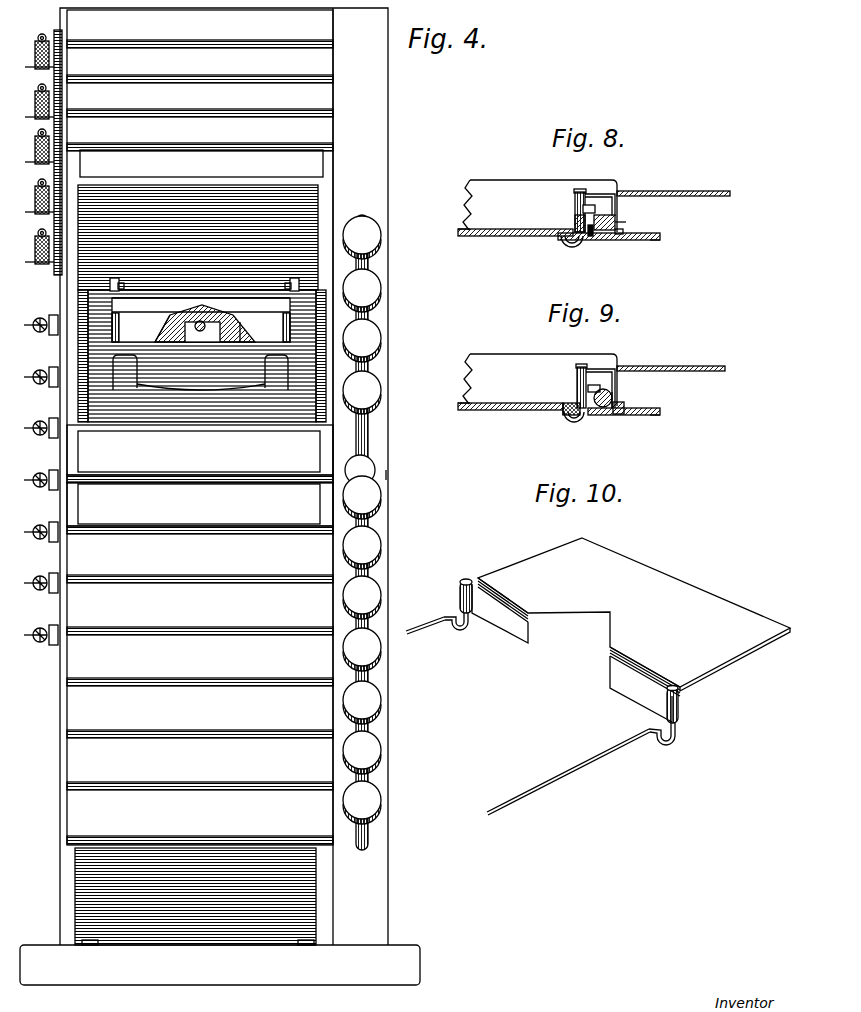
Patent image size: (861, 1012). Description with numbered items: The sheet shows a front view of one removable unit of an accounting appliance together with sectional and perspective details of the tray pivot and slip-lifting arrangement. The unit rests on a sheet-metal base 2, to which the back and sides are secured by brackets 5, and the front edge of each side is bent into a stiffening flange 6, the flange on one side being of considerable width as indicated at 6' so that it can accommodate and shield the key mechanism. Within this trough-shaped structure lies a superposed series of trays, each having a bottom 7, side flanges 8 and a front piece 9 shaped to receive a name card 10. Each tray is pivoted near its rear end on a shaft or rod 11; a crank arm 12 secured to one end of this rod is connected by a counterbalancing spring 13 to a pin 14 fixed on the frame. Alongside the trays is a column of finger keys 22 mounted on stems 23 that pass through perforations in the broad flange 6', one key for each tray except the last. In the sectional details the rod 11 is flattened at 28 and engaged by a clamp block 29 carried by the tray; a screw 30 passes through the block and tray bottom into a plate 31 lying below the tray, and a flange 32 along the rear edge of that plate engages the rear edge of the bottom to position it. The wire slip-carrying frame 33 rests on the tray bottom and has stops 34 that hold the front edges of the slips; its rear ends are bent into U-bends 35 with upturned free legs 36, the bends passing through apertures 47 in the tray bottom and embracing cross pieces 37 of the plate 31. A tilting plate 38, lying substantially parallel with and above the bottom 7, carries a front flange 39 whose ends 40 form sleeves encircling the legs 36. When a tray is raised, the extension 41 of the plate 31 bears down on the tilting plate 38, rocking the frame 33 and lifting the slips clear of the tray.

In FIG. 4, the base 2 is at (390, 956).
In FIG. 4, the bracket 5 is at (86, 946).
In FIG. 4, the flange 6 is at (210, 476).
In FIG. 4, the flange 6' is at (402, 460).
In FIG. 4, the bottom 7 is at (268, 198).
In FIG. 8, the bottom 7 is at (489, 237).
In FIG. 9, the bottom 7 is at (496, 411).
In FIG. 4, the flange 8 is at (82, 400).
In FIG. 8, the flange 8 is at (481, 181).
In FIG. 9, the flange 8 is at (486, 355).
In FIG. 4, the front piece 9 is at (333, 57).
In FIG. 4, the name card 10 is at (320, 168).
In FIG. 4, the shaft or rod 11 is at (240, 344).
In FIG. 8, the shaft or rod 11 is at (622, 229).
In FIG. 9, the shaft or rod 11 is at (613, 401).
In FIG. 4, the crank arm 12 is at (57, 32).
In FIG. 4, the spring 13 is at (40, 147).
In FIG. 4, the pin 14 is at (38, 70).
In FIG. 4, the finger key 22 is at (373, 290).
In FIG. 4, the stem 23 is at (370, 430).
In FIG. 4, the flattened portion 28 is at (192, 342).
In FIG. 8, the flattened portion 28 is at (615, 220).
In FIG. 4, the clamp block 29 is at (210, 340).
In FIG. 8, the clamp block 29 is at (620, 223).
In FIG. 9, the clamp block 29 is at (610, 395).
In FIG. 4, the screw 30 is at (215, 308).
In FIG. 8, the screw 30 is at (583, 210).
In FIG. 9, the screw 30 is at (596, 385).
In FIG. 4, the plate 31 is at (195, 283).
In FIG. 8, the plate 31 is at (611, 242).
In FIG. 9, the plate 31 is at (607, 416).
In FIG. 8, the flange 32 is at (623, 233).
In FIG. 9, the flange 32 is at (625, 408).
In FIG. 4, the slip-carrying frame 33 is at (220, 386).
In FIG. 8, the slip-carrying frame 33 is at (500, 229).
In FIG. 9, the slip-carrying frame 33 is at (500, 403).
In FIG. 10, the slip-carrying frame 33 is at (426, 627).
In FIG. 4, the stop 34 is at (137, 380).
In FIG. 4, the U-bend 35 is at (112, 280).
In FIG. 8, the U-bend 35 is at (572, 248).
In FIG. 9, the U-bend 35 is at (573, 423).
In FIG. 10, the U-bend 35 is at (462, 632).
In FIG. 8, the free leg 36 is at (581, 189).
In FIG. 9, the free leg 36 is at (582, 364).
In FIG. 10, the free leg 36 is at (467, 579).
In FIG. 4, the cross piece 37 is at (136, 278).
In FIG. 9, the cross piece 37 is at (563, 414).
In FIG. 4, the tilting plate 38 is at (270, 305).
In FIG. 8, the tilting plate 38 is at (690, 192).
In FIG. 9, the tilting plate 38 is at (695, 367).
In FIG. 10, the tilting plate 38 is at (694, 590).
In FIG. 4, the flange 39 is at (168, 336).
In FIG. 8, the flange 39 is at (615, 195).
In FIG. 10, the flange 39 is at (510, 628).
In FIG. 4, the sleeve 40 is at (119, 326).
In FIG. 8, the sleeve 40 is at (575, 200).
In FIG. 9, the sleeve 40 is at (578, 375).
In FIG. 10, the sleeve 40 is at (460, 598).
In FIG. 4, the extension 41 is at (148, 300).
In FIG. 8, the extension 41 is at (652, 241).
In FIG. 9, the extension 41 is at (652, 416).
In FIG. 9, the aperture 47 is at (568, 403).